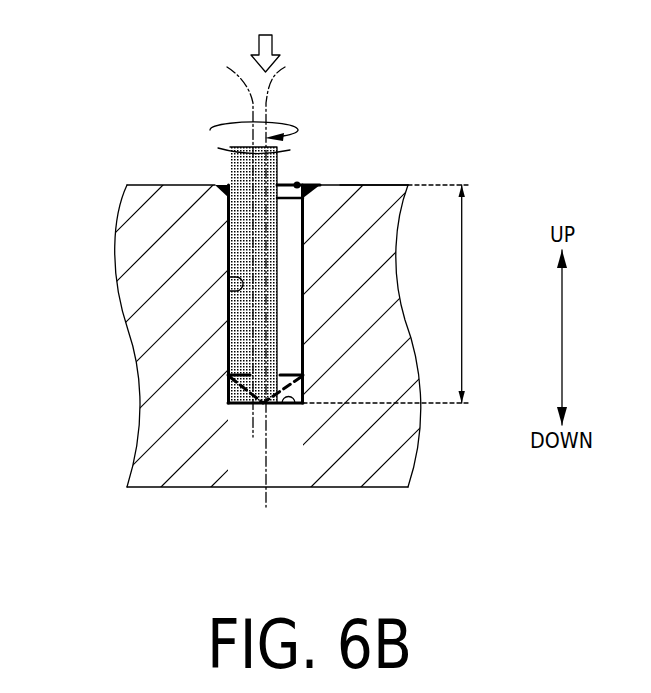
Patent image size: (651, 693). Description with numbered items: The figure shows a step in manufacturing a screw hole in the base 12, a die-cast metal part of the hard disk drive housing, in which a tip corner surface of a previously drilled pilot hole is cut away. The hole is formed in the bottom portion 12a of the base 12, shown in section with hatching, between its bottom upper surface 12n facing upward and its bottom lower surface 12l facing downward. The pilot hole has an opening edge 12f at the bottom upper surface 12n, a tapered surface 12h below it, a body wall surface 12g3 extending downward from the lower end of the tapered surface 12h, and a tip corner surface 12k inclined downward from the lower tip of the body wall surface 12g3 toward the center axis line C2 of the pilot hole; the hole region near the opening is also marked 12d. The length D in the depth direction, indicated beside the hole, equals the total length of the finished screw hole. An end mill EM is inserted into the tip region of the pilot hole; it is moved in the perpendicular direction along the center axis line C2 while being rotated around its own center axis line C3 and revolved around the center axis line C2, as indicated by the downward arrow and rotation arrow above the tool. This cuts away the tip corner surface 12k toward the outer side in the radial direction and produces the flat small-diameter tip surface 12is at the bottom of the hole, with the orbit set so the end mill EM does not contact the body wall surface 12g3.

The base 12 is at (93, 441).
The bottom portion 12a is at (409, 172).
The opening edge of hole 12d is at (297, 185).
The opening edge 12f is at (217, 185).
The body wall surface 12g3 is at (228, 285).
The tapered surface 12h is at (310, 185).
The small-diameter tip surface 12is is at (297, 403).
The tip corner surface 12k is at (218, 397).
The bottom lower surface 12l is at (377, 487).
The bottom upper surface 12n is at (383, 185).
The end mill EM is at (230, 170).
The center axis line of the pilot hole C2 is at (296, 280).
The center axis line of the end mill C3 is at (223, 245).
The length in the depth direction D is at (471, 294).